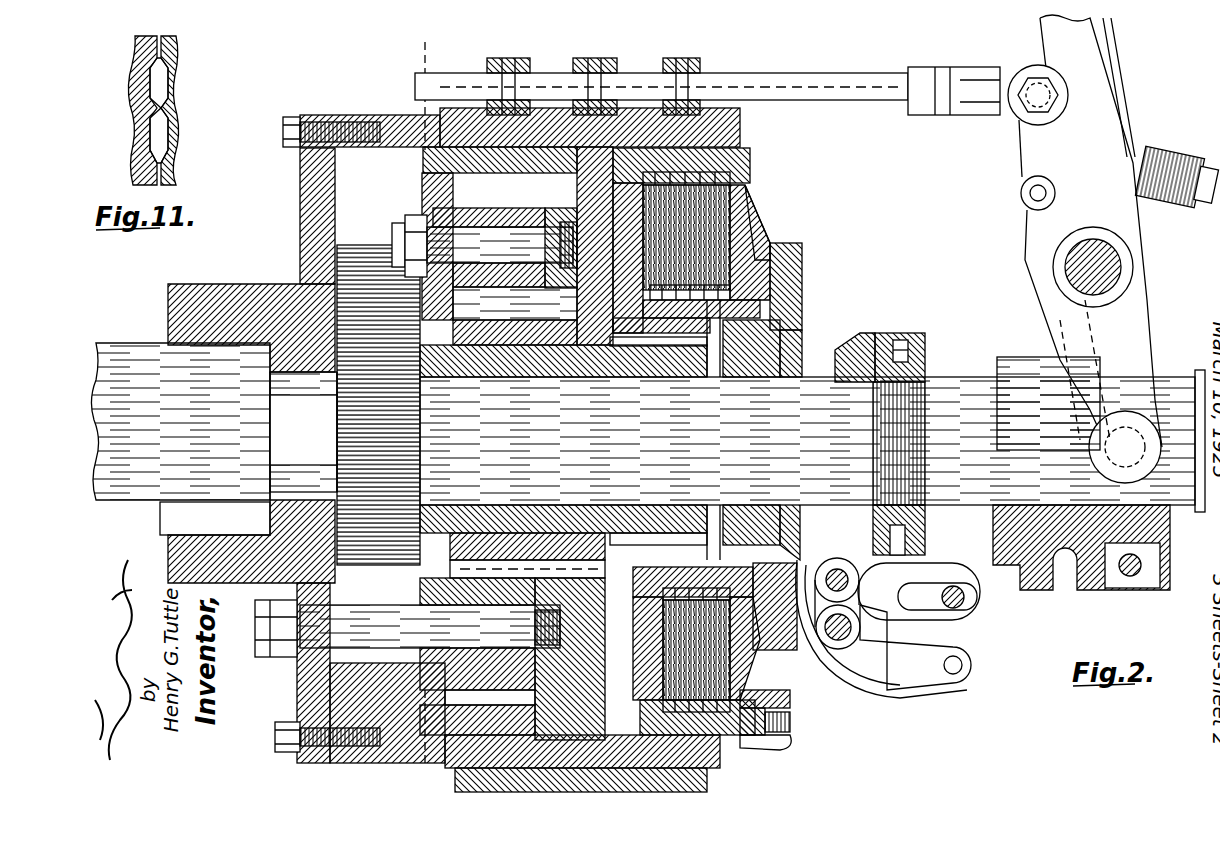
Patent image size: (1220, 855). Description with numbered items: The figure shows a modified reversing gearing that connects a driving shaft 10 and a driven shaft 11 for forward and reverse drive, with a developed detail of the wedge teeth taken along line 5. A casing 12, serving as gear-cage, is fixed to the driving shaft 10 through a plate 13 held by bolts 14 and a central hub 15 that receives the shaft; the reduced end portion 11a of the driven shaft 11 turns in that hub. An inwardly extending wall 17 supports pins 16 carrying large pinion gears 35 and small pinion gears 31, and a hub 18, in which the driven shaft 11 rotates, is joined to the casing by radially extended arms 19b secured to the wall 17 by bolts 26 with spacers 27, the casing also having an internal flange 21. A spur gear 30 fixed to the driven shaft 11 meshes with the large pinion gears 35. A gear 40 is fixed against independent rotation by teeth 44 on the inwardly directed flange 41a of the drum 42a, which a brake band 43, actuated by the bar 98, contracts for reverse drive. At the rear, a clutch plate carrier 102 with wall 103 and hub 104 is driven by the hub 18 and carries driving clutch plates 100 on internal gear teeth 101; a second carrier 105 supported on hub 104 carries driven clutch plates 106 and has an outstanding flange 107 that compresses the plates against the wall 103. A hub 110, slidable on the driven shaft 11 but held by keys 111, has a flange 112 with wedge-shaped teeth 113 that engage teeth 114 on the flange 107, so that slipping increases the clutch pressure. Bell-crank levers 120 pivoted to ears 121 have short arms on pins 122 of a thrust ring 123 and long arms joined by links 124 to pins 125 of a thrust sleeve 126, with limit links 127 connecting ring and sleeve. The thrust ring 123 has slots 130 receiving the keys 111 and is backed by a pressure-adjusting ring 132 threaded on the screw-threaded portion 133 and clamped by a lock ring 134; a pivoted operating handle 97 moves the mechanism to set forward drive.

In FIG. 2, the section line 5 is at (417, 402).
In FIG. 2, the driving shaft 10 is at (122, 345).
In FIG. 2, the driven shaft 11 is at (757, 228).
In FIG. 2, the end portion of driven shaft 11a is at (303, 436).
In FIG. 2, the casing 12 is at (410, 117).
In FIG. 2, the plate 13 is at (298, 690).
In FIG. 2, the bolts 14 is at (290, 118).
In FIG. 2, the hub 15 is at (240, 285).
In FIG. 2, the bolts or pins 16 is at (430, 626).
In FIG. 2, the flange or wall 17 is at (560, 560).
In FIG. 2, the hub 18 is at (512, 520).
In FIG. 2, the radially outwardly extended arms 19b is at (432, 218).
In FIG. 2, the internal flange 21 is at (455, 760).
In FIG. 2, the bolts 26 is at (473, 235).
In FIG. 2, the spacers 27 is at (514, 225).
In FIG. 2, the spur gear 30 is at (420, 425).
In FIG. 2, the small pinion gears 31 is at (466, 685).
In FIG. 2, the large pinion gears 35 is at (385, 595).
In FIG. 2, the gear 40 is at (540, 530).
In FIG. 2, the inwardly directed flange 41a is at (780, 745).
In FIG. 2, the drum 42a is at (722, 757).
In FIG. 2, the brake band 43 is at (712, 782).
In FIG. 2, the teeth 44 is at (572, 540).
In FIG. 2, the operating handle 97 is at (1097, 105).
In FIG. 2, the bar 98 is at (812, 88).
In FIG. 2, the driving clutch plates 100 is at (748, 680).
In FIG. 2, the internal gear teeth 101 is at (752, 710).
In FIG. 2, the clutch plate carrier 102 is at (790, 722).
In FIG. 2, the wall 103 is at (600, 630).
In FIG. 2, the hub 104 is at (656, 555).
In FIG. 2, the second carrier 105 is at (706, 575).
In FIG. 2, the driven clutch plates 106 is at (792, 699).
In FIG. 11, the outstanding flange 107 is at (130, 136).
In FIG. 2, the outstanding flange 107 is at (758, 652).
In FIG. 2, the hub 110 is at (788, 335).
In FIG. 2, the keys 111 is at (770, 520).
In FIG. 11, the flange 112 is at (176, 152).
In FIG. 2, the flange 112 is at (803, 264).
In FIG. 11, the wedge-shaped teeth 113 is at (155, 68).
In FIG. 11, the teeth 114 is at (163, 109).
In FIG. 2, the teeth 114 is at (800, 245).
In FIG. 2, the bell-crank levers 120 is at (893, 685).
In FIG. 2, the ears 121 is at (862, 614).
In FIG. 2, the pins 122 is at (852, 587).
In FIG. 2, the thrust ring 123 is at (855, 336).
In FIG. 2, the links 124 is at (972, 643).
In FIG. 2, the pins 125 is at (966, 597).
In FIG. 2, the thrust sleeve 126 is at (1066, 568).
In FIG. 2, the limit links 127 is at (900, 570).
In FIG. 2, the slots 130 is at (862, 490).
In FIG. 2, the pressure-adjusting ring 132 is at (918, 352).
In FIG. 2, the externally screw-threaded portion 133 is at (905, 392).
In FIG. 2, the lock ring 134 is at (915, 335).